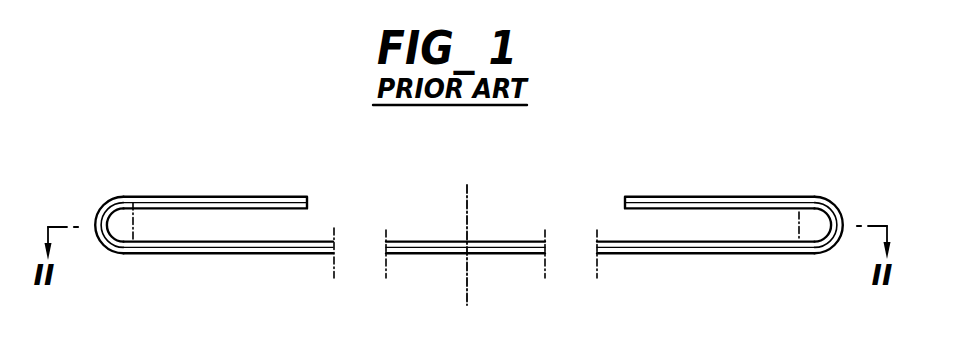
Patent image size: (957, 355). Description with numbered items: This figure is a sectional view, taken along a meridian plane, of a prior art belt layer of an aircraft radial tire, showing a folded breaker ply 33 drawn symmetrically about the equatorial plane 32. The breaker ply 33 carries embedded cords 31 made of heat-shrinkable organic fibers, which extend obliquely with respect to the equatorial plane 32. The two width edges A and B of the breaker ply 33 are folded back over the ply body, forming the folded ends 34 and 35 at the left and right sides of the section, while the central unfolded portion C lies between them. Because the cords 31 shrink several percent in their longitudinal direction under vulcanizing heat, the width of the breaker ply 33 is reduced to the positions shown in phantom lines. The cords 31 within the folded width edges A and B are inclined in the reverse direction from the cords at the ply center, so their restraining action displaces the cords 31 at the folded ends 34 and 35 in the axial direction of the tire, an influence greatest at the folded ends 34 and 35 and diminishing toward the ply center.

The cords 31 is at (215, 252).
The equatorial plane 32 is at (468, 210).
The breaker ply 33 is at (287, 191).
The folded end 34 is at (95, 227).
The folded end 35 is at (838, 209).
The width edge A is at (213, 197).
The width edge B is at (737, 197).
The region C is at (298, 258).